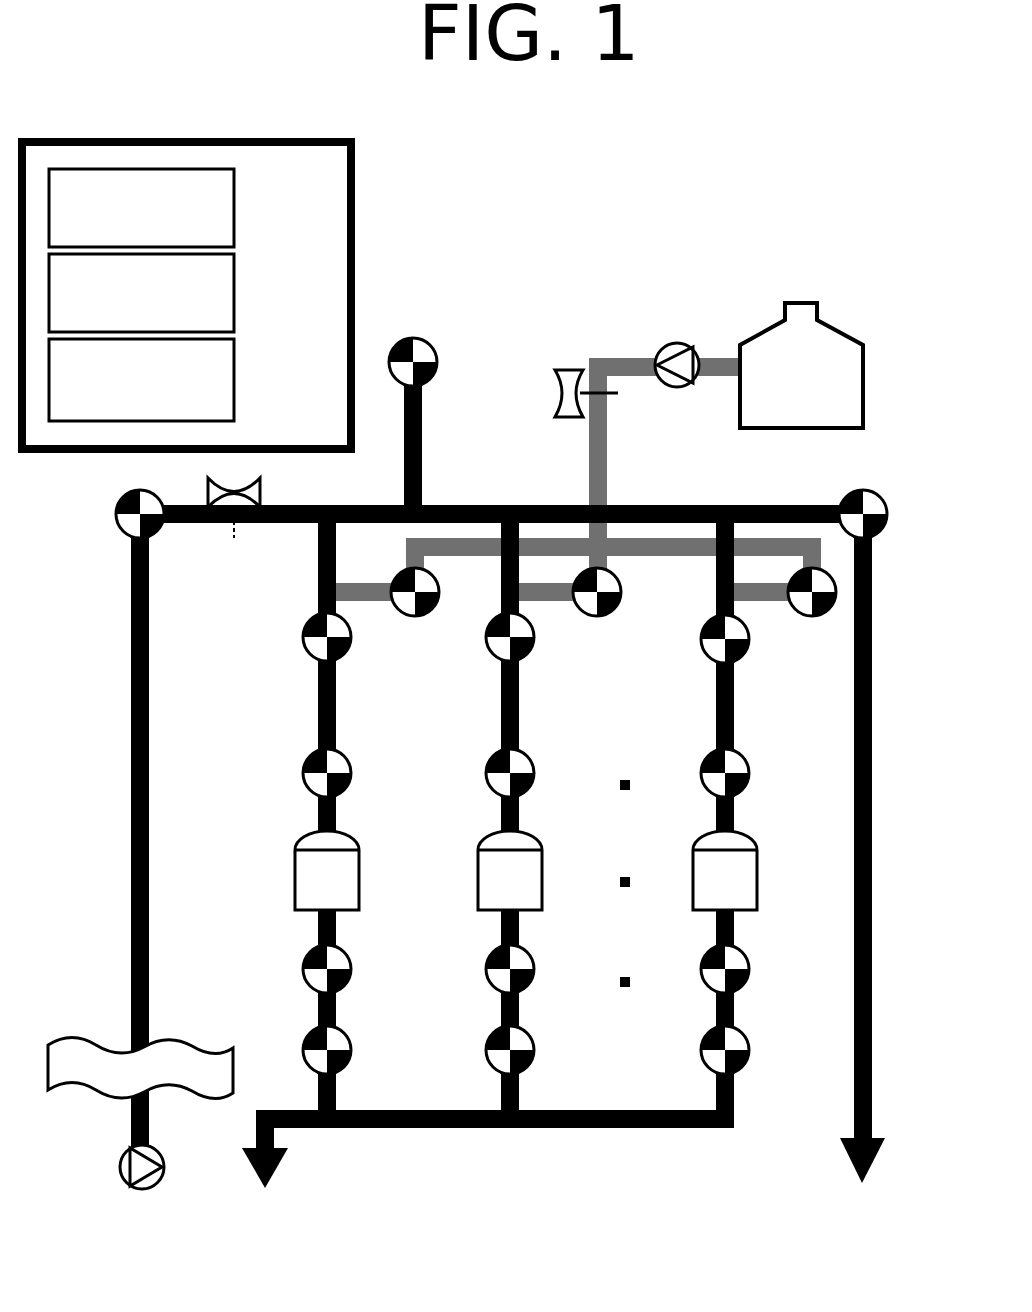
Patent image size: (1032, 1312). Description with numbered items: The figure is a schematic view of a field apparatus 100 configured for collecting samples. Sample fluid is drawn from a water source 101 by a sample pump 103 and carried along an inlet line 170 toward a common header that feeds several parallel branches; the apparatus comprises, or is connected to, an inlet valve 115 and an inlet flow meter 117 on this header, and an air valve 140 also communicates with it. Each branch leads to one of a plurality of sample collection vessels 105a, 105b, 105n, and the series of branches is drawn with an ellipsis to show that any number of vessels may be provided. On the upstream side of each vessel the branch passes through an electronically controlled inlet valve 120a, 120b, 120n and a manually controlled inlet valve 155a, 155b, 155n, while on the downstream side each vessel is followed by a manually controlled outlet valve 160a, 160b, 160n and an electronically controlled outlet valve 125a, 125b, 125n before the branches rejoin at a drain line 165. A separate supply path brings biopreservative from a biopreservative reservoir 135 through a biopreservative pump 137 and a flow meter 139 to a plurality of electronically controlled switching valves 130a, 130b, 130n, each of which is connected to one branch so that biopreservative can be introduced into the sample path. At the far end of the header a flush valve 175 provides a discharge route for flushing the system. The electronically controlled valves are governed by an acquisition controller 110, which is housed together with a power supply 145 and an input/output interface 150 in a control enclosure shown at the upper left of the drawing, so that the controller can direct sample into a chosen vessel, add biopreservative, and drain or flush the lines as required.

The field apparatus 100 is at (640, 190).
The water source 101 is at (62, 1040).
The sample pump 103 is at (113, 1163).
The sample collection vessel 105a is at (290, 878).
The sample collection vessel 105b is at (475, 878).
The sample collection vessel 105n is at (690, 878).
The acquisition controller 110 is at (237, 223).
The inlet valve 115 is at (122, 500).
The inlet flow meter 117 is at (262, 497).
The electronically controlled inlet valve 120a is at (307, 652).
The electronically controlled inlet valve 120b is at (490, 652).
The electronically controlled inlet valve 120n is at (705, 657).
The electronically controlled outlet valve 125a is at (303, 1045).
The electronically controlled outlet valve 125b is at (486, 1045).
The electronically controlled outlet valve 125n is at (702, 1045).
The electronically controlled switching valve 130a is at (424, 617).
The electronically controlled switching valve 130b is at (600, 617).
The electronically controlled switching valve 130n is at (815, 617).
The biopreservative reservoir 135 is at (770, 326).
The biopreservative pump 137 is at (660, 348).
The flow meter 139 is at (555, 410).
The air valve 140 is at (440, 355).
The power supply 145 is at (237, 298).
The input/output interface 150 is at (237, 376).
The manually controlled inlet valve 155a is at (350, 765).
The manually controlled inlet valve 155b is at (533, 765).
The manually controlled inlet valve 155n is at (748, 765).
The manually controlled outlet valve 160a is at (350, 962).
The manually controlled outlet valve 160b is at (533, 962).
The manually controlled outlet valve 160n is at (748, 962).
The drain line 165 is at (485, 1132).
The inlet line 170 is at (150, 778).
The flush valve 175 is at (880, 496).